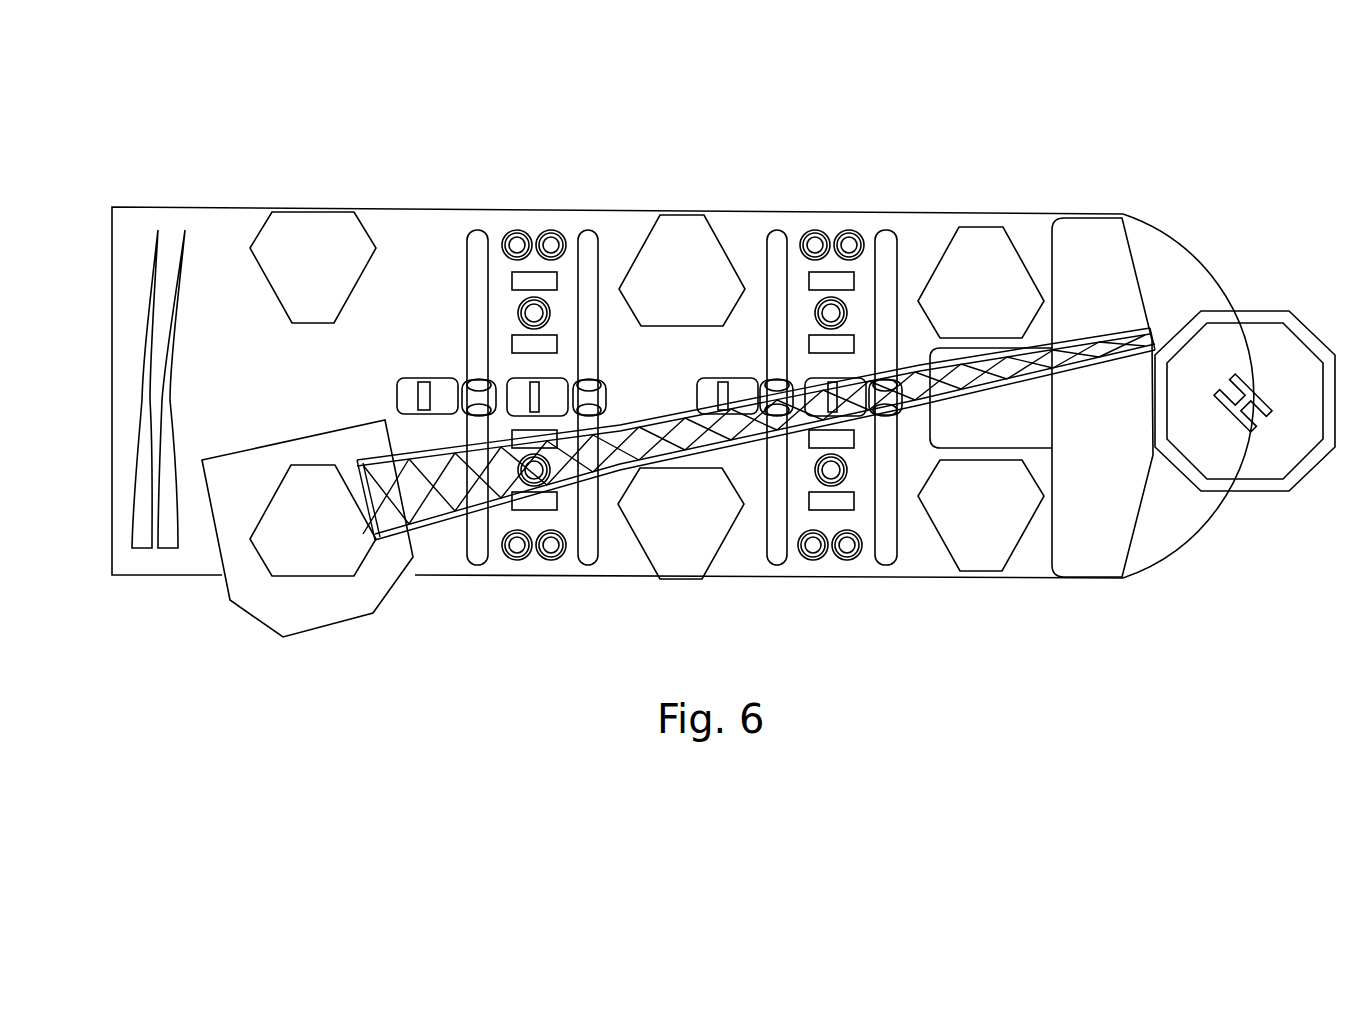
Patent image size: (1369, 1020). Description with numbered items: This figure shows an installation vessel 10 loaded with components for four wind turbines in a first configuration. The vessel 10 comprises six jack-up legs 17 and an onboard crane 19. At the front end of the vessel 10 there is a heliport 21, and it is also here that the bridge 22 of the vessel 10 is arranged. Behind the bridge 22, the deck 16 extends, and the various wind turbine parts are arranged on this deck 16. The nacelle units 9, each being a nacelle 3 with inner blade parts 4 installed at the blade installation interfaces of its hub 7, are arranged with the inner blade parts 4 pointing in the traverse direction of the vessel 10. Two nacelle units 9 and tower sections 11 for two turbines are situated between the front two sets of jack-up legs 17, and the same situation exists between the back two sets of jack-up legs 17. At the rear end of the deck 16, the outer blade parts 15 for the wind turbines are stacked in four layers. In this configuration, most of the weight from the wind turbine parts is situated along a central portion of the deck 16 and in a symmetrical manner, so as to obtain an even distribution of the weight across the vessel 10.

The nacelle 3 is at (413, 393).
The inner blade parts 4 is at (475, 307).
The hub 7 is at (605, 392).
The nacelle units 9 is at (884, 197).
The vessel 10 is at (600, 157).
The tower sections 11 is at (813, 197).
The outer blade parts 15 is at (170, 355).
The deck 16 is at (330, 396).
The jack-up legs 17 is at (329, 281).
The onboard crane 19 is at (1078, 340).
The heliport 21 is at (1298, 374).
The bridge 22 is at (1121, 414).